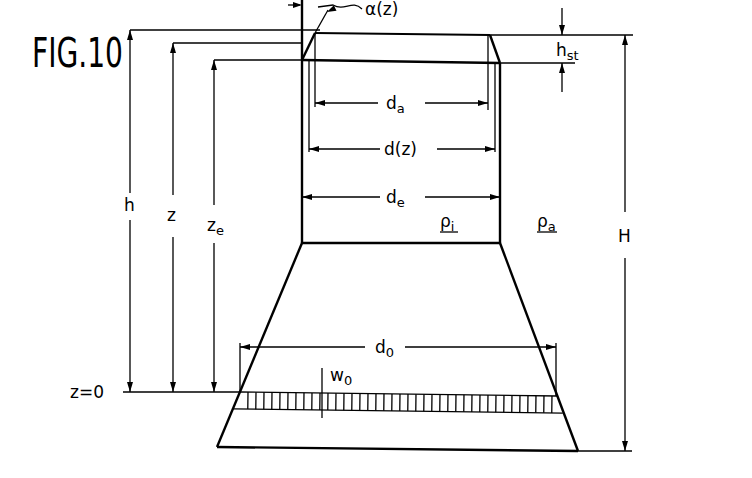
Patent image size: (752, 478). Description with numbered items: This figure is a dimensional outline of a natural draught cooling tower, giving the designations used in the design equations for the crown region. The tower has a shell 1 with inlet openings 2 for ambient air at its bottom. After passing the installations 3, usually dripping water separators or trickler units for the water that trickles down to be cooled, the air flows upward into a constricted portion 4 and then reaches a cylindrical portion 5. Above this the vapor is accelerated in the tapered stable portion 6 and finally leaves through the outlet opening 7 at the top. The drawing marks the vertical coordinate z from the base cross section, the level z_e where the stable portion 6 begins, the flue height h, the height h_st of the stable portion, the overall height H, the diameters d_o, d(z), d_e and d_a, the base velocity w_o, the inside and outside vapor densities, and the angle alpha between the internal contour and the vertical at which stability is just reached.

The shell 1 is at (293, 187).
The inlet openings 2 is at (223, 432).
The installations 3 is at (554, 406).
The constricted portion 4 is at (524, 307).
The cylindrical portion 5 is at (503, 163).
The stable portion 6 is at (496, 45).
The outlet opening 7 is at (423, 33).